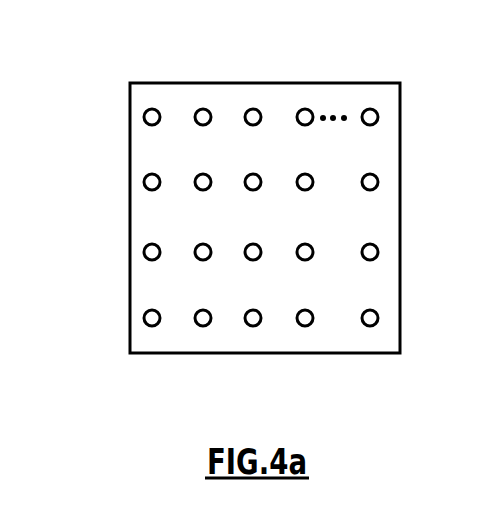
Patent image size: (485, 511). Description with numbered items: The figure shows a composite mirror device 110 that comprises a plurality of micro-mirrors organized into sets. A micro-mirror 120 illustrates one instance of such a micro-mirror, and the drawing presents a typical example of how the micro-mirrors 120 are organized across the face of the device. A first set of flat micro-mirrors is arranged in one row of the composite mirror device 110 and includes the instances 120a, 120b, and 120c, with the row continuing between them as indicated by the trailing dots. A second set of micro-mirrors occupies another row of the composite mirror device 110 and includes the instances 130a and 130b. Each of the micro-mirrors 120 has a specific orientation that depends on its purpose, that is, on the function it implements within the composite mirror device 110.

The composite mirror device 110 is at (190, 76).
The micro-mirror 120 is at (190, 247).
The flat micro-mirror instance 120a is at (143, 115).
The flat micro-mirror instance 120b is at (211, 108).
The flat micro-mirror instance 120c is at (380, 115).
The micro-mirror instance of second set 130a is at (142, 321).
The micro-mirror instance of second set 130b is at (302, 329).